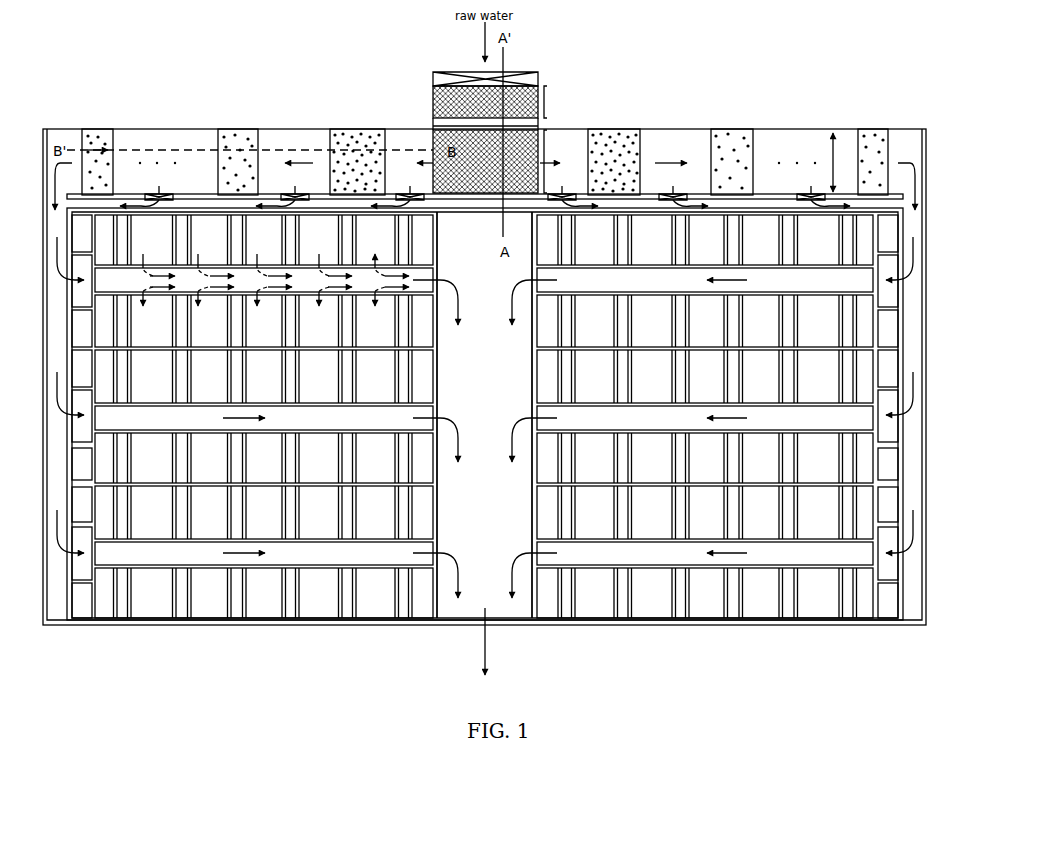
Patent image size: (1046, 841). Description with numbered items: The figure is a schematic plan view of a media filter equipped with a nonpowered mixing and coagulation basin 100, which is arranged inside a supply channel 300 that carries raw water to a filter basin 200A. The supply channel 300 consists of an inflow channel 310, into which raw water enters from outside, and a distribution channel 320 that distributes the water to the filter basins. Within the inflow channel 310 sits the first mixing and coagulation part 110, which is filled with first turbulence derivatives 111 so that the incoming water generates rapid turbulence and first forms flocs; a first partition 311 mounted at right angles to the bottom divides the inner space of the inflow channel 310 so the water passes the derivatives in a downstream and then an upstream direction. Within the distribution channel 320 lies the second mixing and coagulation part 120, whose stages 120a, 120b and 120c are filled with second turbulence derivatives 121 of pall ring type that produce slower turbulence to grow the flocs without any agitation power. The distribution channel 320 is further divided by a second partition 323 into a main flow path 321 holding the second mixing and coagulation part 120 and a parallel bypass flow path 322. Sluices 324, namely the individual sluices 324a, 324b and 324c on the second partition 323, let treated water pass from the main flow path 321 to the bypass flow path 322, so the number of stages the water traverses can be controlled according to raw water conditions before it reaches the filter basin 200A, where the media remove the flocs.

The mixing and coagulation basin 100 is at (745, 58).
The first mixing and coagulation part 110 is at (506, 127).
The first turbulence derivatives 111 is at (433, 100).
The second mixing and coagulation part 120 is at (738, 128).
The stage of the second mixing and coagulation part 120a is at (640, 124).
The stage of the second mixing and coagulation part 120b is at (753, 124).
The stage of the second mixing and coagulation part 120c is at (873, 147).
The second turbulence derivatives 121 is at (338, 129).
The filter basin 200A is at (503, 369).
The supply channel 300 is at (378, 32).
The inflow channel 310 is at (440, 72).
The first partition 311 is at (437, 126).
The distribution channel 320 is at (77, 128).
The main flow path 321 is at (833, 150).
The bypass flow path 322 is at (880, 203).
The second partition 323 is at (193, 194).
The sluice 324 is at (777, 250).
The sluice 324a is at (558, 200).
The sluice 324b is at (672, 200).
The sluice 324c is at (805, 200).